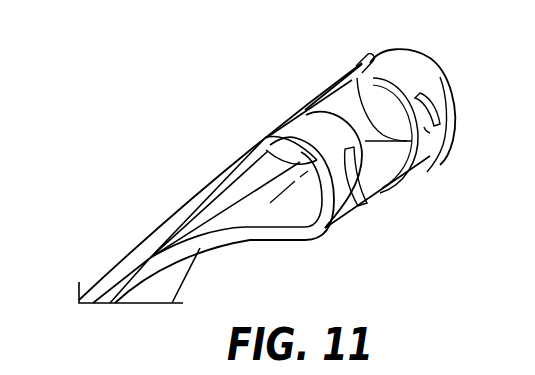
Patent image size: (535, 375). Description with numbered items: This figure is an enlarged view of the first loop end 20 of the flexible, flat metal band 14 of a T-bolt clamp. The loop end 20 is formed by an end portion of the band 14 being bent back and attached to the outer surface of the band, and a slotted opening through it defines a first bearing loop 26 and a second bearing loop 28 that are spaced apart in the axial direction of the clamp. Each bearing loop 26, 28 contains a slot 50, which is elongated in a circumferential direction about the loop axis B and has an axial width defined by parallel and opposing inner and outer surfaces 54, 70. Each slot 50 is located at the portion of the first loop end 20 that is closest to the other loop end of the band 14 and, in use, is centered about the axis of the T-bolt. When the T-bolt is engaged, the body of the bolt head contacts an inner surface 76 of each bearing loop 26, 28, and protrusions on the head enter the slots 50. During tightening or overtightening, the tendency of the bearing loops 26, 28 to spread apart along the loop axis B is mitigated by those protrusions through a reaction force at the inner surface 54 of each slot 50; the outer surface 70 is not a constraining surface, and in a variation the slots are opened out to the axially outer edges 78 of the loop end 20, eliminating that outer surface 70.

The band 14 is at (82, 194).
The first loop end 20 is at (203, 190).
The first bearing loop 26 is at (284, 229).
The second bearing loop 28 is at (335, 86).
The axially outer edges 78 is at (318, 160).
The inner surface of slot 54 is at (428, 133).
The loop axis B is at (437, 76).
The inner surface of bearing loop 76 is at (392, 126).
The outer surface of slot 70 is at (430, 133).
The slot 50 is at (432, 153).